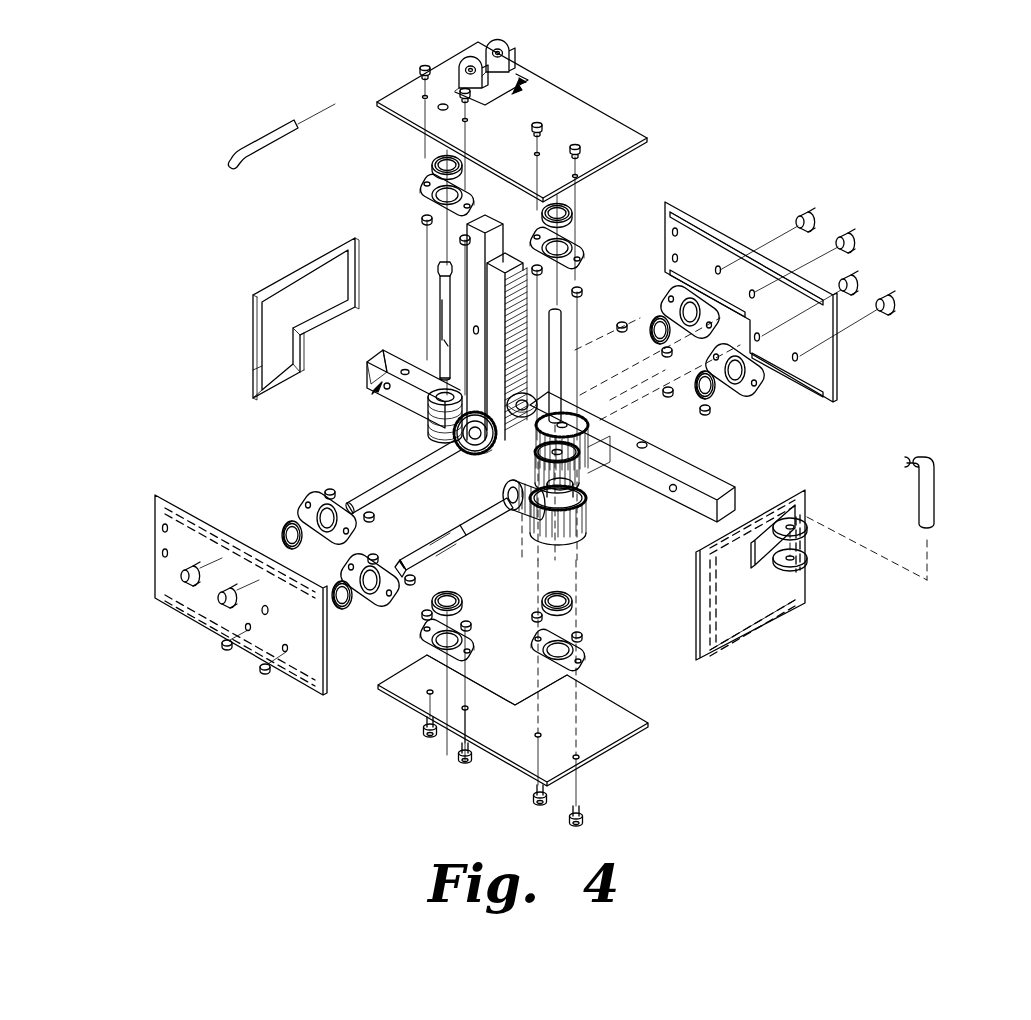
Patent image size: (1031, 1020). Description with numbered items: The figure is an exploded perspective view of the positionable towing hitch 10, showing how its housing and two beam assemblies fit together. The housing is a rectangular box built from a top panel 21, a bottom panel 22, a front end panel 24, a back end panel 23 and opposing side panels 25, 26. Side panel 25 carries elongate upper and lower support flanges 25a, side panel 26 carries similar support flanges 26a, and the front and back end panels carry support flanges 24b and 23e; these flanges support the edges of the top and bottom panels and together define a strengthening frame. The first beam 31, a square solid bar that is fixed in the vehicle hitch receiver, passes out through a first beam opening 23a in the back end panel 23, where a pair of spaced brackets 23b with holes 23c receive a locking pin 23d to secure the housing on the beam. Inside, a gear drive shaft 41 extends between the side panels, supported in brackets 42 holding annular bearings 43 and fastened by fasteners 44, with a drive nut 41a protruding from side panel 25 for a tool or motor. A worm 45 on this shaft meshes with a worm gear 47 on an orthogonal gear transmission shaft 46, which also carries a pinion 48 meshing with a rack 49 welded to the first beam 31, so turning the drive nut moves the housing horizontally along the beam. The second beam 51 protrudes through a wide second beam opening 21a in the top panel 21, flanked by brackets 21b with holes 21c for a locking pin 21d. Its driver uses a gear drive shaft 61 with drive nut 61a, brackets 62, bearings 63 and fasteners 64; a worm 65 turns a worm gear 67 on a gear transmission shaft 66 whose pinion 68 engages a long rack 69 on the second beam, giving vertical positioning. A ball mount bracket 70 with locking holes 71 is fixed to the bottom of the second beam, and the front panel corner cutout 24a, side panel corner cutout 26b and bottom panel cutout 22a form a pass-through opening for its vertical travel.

The positionable towing hitch 10 is at (124, 104).
The top panel 21 is at (617, 117).
The second beam opening 21a is at (525, 88).
The brackets 21b is at (508, 74).
The hole 21c is at (487, 55).
The locking pin 21d is at (258, 139).
The bottom panel 22 is at (605, 755).
The bottom panel cutout 22a is at (510, 698).
The back end panel 23 is at (808, 585).
The first beam opening 23a is at (755, 560).
The brackets 23b is at (800, 556).
The hole 23c is at (800, 526).
The locking pin 23d is at (936, 486).
The support flange 23e is at (755, 637).
The front end panel 24 is at (307, 258).
The front panel corner cutout 24a is at (318, 355).
The support flange 24b is at (262, 376).
The side panel 25 is at (152, 590).
The support flanges 25a is at (165, 520).
The side panel 26 is at (708, 212).
The support flanges 26a is at (670, 272).
The side panel corner cutout 26b is at (748, 312).
The first beam 31 is at (738, 500).
The gear drive shaft 41 is at (470, 540).
The drive nut 41a is at (398, 599).
The bracket 42 is at (750, 380).
The annular bearing 43 is at (720, 398).
The fasteners 44 is at (265, 672).
The worm 45 is at (505, 494).
The gear transmission shaft 46 is at (532, 392).
The worm gear 47 is at (584, 524).
The pinion 48 is at (582, 478).
The rack 49 is at (604, 468).
The second beam 51 is at (472, 228).
The gear drive shaft 61 is at (440, 290).
The drive nut 61a is at (440, 262).
The bracket 62 is at (430, 194).
The annular bearing 63 is at (432, 165).
The fasteners 64 is at (585, 130).
The worm 65 is at (433, 425).
The gear transmission shaft 66 is at (355, 495).
The worm gear 67 is at (455, 452).
The pinion 68 is at (548, 380).
The rack 69 is at (506, 255).
The ball mount bracket 70 is at (415, 372).
The locking holes 71 is at (372, 392).